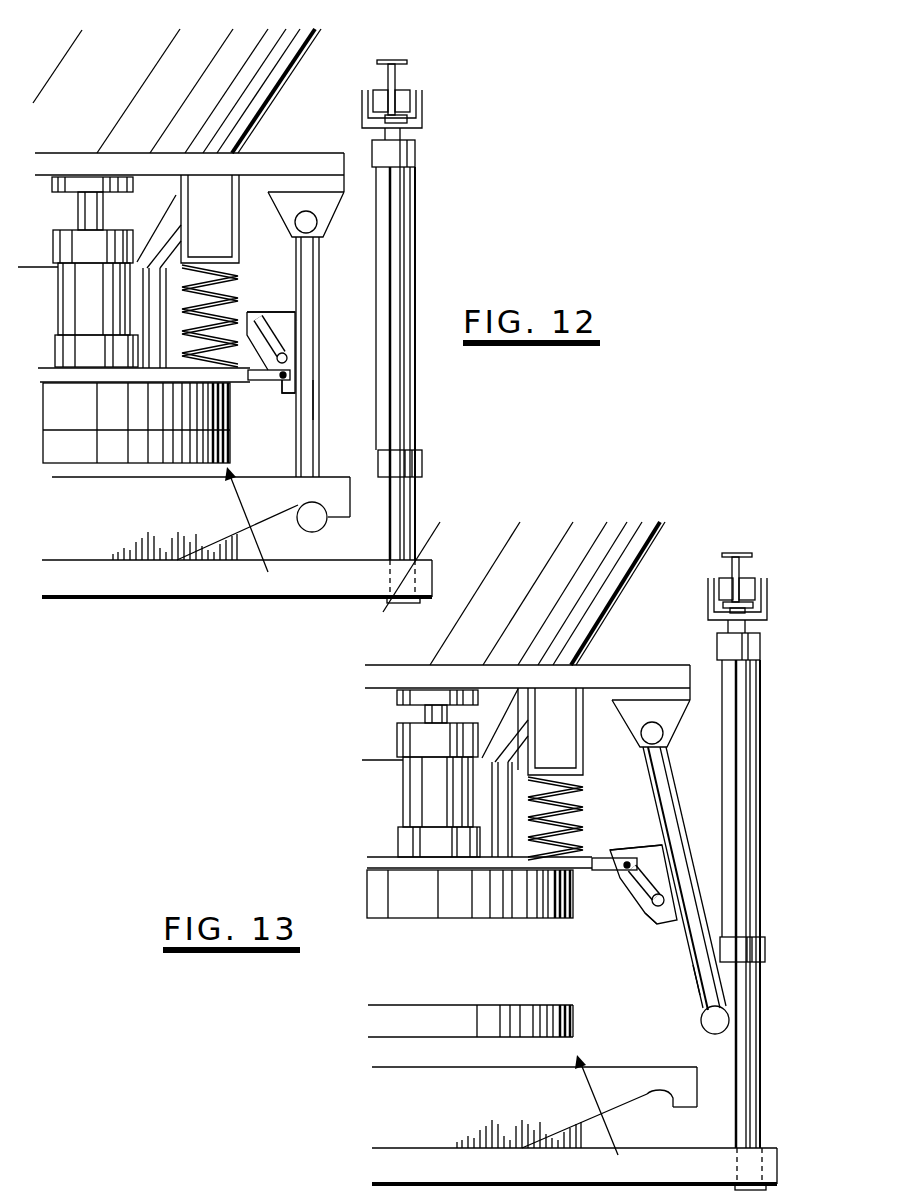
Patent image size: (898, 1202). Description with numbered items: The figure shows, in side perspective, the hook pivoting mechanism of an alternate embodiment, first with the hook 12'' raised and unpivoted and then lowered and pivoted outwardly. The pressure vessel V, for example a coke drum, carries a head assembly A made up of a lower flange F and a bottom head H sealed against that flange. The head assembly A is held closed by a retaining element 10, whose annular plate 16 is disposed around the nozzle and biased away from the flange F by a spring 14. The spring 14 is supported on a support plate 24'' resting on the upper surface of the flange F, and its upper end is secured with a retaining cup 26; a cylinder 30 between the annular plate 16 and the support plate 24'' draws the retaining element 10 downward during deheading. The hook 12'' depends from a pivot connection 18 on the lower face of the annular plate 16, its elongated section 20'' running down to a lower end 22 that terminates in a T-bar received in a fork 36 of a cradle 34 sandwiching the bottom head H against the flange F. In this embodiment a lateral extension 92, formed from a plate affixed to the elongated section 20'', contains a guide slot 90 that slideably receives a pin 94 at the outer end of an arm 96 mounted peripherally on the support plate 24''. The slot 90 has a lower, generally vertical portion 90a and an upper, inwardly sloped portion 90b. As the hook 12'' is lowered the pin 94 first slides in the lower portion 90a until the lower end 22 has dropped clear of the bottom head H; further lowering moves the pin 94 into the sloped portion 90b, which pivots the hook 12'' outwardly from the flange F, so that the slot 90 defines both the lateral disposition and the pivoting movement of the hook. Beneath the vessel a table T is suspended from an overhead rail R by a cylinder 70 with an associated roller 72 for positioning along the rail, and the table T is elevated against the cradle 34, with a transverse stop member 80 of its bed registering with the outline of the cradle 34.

In FIG. 12, the retaining element 10 is at (331, 144).
In FIG. 13, the retaining element 10 is at (678, 652).
In FIG. 12, the hook 12'' is at (344, 411).
In FIG. 13, the hook 12'' is at (661, 999).
In FIG. 12, the spring 14 is at (208, 282).
In FIG. 13, the spring 14 is at (548, 782).
In FIG. 12, the annular plate 16 is at (133, 163).
In FIG. 13, the annular plate 16 is at (398, 677).
In FIG. 12, the pivot connection 18 is at (317, 222).
In FIG. 13, the pivot connection 18 is at (663, 733).
In FIG. 12, the elongated section 20'' is at (381, 357).
In FIG. 13, the elongated section 20'' is at (727, 878).
In FIG. 12, the lower end 22 is at (310, 520).
In FIG. 13, the lower end 22 is at (717, 1022).
In FIG. 12, the support plate 24'' is at (129, 324).
In FIG. 13, the support plate 24'' is at (461, 814).
In FIG. 12, the retaining cup 26 is at (195, 227).
In FIG. 13, the retaining cup 26 is at (543, 748).
In FIG. 12, the cylinder 30 is at (93, 292).
In FIG. 13, the cylinder 30 is at (433, 798).
In FIG. 13, the cradle 34 is at (430, 1110).
In FIG. 12, the fork 36 is at (343, 498).
In FIG. 13, the fork 36 is at (685, 1093).
In FIG. 12, the cylinder 70 is at (392, 210).
In FIG. 12, the roller 72 is at (403, 97).
In FIG. 13, the roller 72 is at (752, 587).
In FIG. 12, the transverse stop member 80 is at (220, 558).
In FIG. 13, the transverse stop member 80 is at (565, 1130).
In FIG. 12, the guide slot 90 is at (282, 345).
In FIG. 13, the guide slot 90 is at (673, 868).
In FIG. 12, the lower slot portion 90a is at (287, 358).
In FIG. 13, the lower slot portion 90a is at (661, 892).
In FIG. 12, the upper slot portion 90b is at (285, 343).
In FIG. 13, the upper slot portion 90b is at (657, 852).
In FIG. 12, the lateral extension 92 is at (258, 314).
In FIG. 13, the lateral extension 92 is at (660, 923).
In FIG. 12, the pin 94 is at (285, 382).
In FIG. 13, the pin 94 is at (628, 875).
In FIG. 12, the arm 96 is at (258, 378).
In FIG. 13, the arm 96 is at (603, 871).
In FIG. 12, the overhead rail R is at (387, 58).
In FIG. 13, the overhead rail R is at (722, 552).
In FIG. 12, the pressure vessel V is at (225, 107).
In FIG. 13, the pressure vessel V is at (567, 597).
In FIG. 12, the lower flange F is at (65, 413).
In FIG. 13, the lower flange F is at (410, 897).
In FIG. 12, the bottom head H is at (115, 452).
In FIG. 13, the bottom head H is at (460, 1013).
In FIG. 12, the table T is at (150, 583).
In FIG. 13, the table T is at (423, 1173).
In FIG. 12, the head assembly A is at (254, 528).
In FIG. 13, the head assembly A is at (605, 1114).